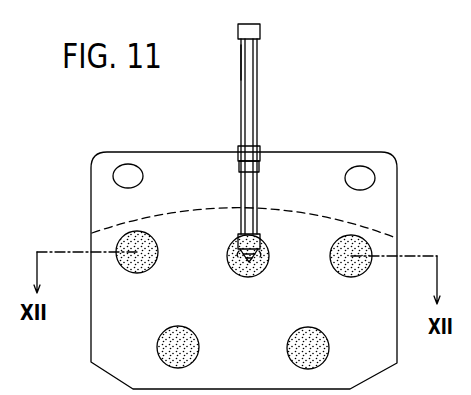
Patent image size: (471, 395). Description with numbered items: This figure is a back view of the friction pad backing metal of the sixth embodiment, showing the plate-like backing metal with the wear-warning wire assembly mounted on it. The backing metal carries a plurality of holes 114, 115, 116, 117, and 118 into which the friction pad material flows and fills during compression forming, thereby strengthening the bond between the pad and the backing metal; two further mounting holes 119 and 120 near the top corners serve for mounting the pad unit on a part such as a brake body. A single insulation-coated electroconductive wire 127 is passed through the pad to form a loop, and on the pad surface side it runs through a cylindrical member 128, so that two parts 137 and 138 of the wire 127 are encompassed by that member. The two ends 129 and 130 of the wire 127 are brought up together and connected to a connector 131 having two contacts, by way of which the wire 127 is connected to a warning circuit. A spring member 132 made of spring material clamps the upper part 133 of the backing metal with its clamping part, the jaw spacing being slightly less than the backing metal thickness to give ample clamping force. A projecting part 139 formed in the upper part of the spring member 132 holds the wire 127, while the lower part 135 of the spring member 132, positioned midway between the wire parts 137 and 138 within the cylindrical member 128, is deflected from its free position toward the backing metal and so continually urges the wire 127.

The hole 114 is at (350, 277).
The hole 115 is at (268, 272).
The hole 116 is at (140, 273).
The hole 117 is at (329, 351).
The hole 118 is at (199, 349).
The mounting hole 119 is at (372, 168).
The mounting hole 120 is at (128, 164).
The electroconductive wire 127 is at (254, 112).
The cylindrical member 128 is at (260, 240).
The wire end 129 is at (253, 55).
The wire end 130 is at (242, 58).
The connector 131 is at (257, 32).
The spring member 132 is at (238, 154).
The upper part of the backing metal 133 is at (328, 152).
The lower part of the spring member 135 is at (249, 262).
The wire part 137 is at (237, 253).
The wire part 138 is at (261, 252).
The projecting part 139 is at (252, 166).